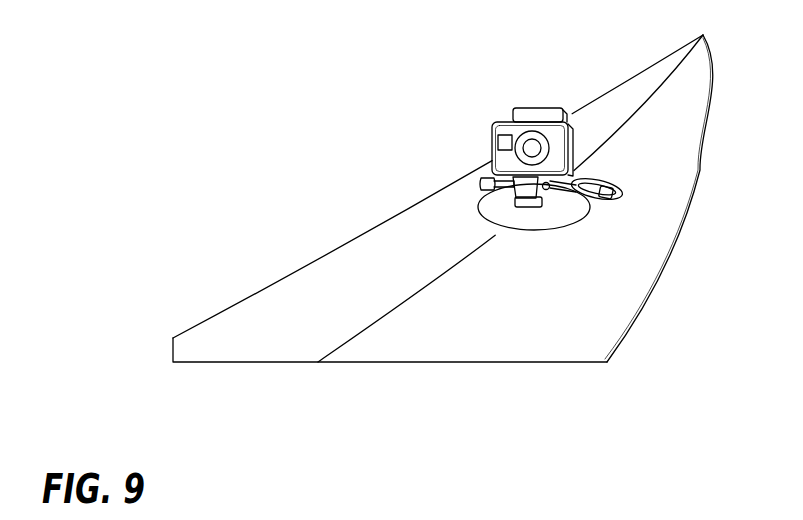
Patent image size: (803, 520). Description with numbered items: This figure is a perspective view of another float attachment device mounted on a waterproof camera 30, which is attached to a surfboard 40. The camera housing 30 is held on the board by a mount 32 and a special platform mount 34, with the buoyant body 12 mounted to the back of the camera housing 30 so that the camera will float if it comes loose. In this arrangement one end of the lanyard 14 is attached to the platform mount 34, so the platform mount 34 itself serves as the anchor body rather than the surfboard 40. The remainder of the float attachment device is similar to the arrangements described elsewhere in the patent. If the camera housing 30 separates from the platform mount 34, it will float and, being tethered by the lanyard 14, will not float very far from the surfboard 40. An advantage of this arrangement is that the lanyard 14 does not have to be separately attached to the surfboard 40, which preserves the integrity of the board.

The buoyant body 12 is at (575, 148).
The lanyard 14 is at (583, 200).
The waterproof camera 30 is at (498, 121).
The mount 32 is at (490, 195).
The platform mount 34 is at (533, 224).
The surfboard 40 is at (605, 320).